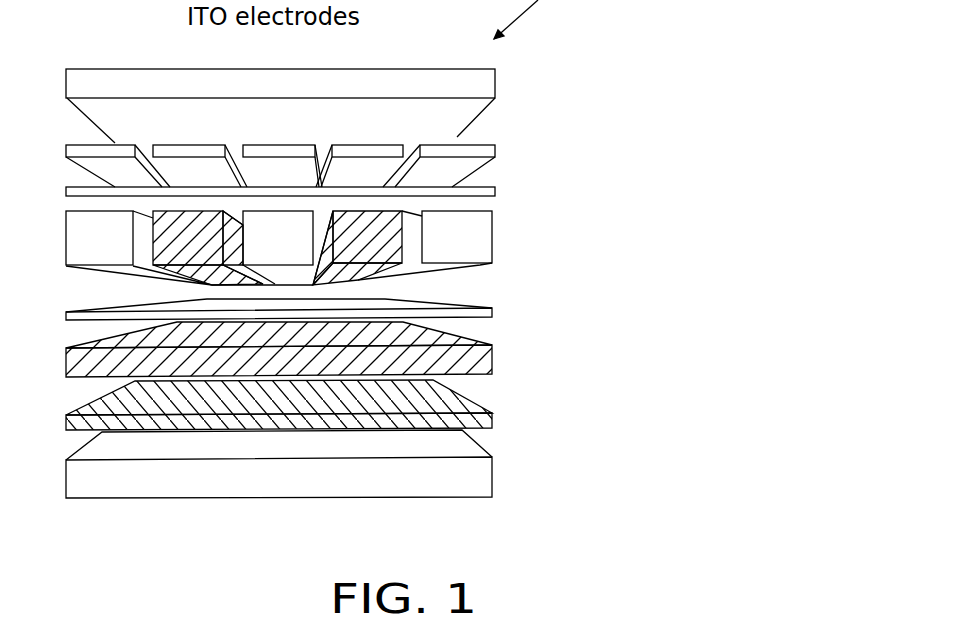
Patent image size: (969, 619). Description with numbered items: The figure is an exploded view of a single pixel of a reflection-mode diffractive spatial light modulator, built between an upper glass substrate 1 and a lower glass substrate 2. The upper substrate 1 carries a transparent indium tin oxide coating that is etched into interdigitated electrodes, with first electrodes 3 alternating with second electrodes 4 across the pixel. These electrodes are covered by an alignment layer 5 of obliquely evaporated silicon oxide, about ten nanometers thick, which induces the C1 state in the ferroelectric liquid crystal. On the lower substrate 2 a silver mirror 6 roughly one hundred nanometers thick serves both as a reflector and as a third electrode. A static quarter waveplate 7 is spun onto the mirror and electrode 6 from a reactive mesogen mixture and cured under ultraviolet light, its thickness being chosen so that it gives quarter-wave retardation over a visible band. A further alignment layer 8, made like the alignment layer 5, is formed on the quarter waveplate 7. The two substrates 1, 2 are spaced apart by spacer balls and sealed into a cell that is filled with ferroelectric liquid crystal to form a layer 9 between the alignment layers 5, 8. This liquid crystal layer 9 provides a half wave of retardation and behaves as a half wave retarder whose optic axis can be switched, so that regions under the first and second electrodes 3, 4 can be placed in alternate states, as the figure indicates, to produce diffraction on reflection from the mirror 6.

The upper glass substrate 1 is at (108, 83).
The lower glass substrate 2 is at (417, 477).
The first electrode 3 is at (335, 150).
The second electrode 4 is at (247, 151).
The alignment layer 5 is at (494, 193).
The mirror and electrode 6 is at (465, 401).
The static quarter waveplate 7 is at (482, 354).
The further alignment layer 8 is at (493, 314).
The ferroelectric liquid crystal layer 9 is at (385, 228).